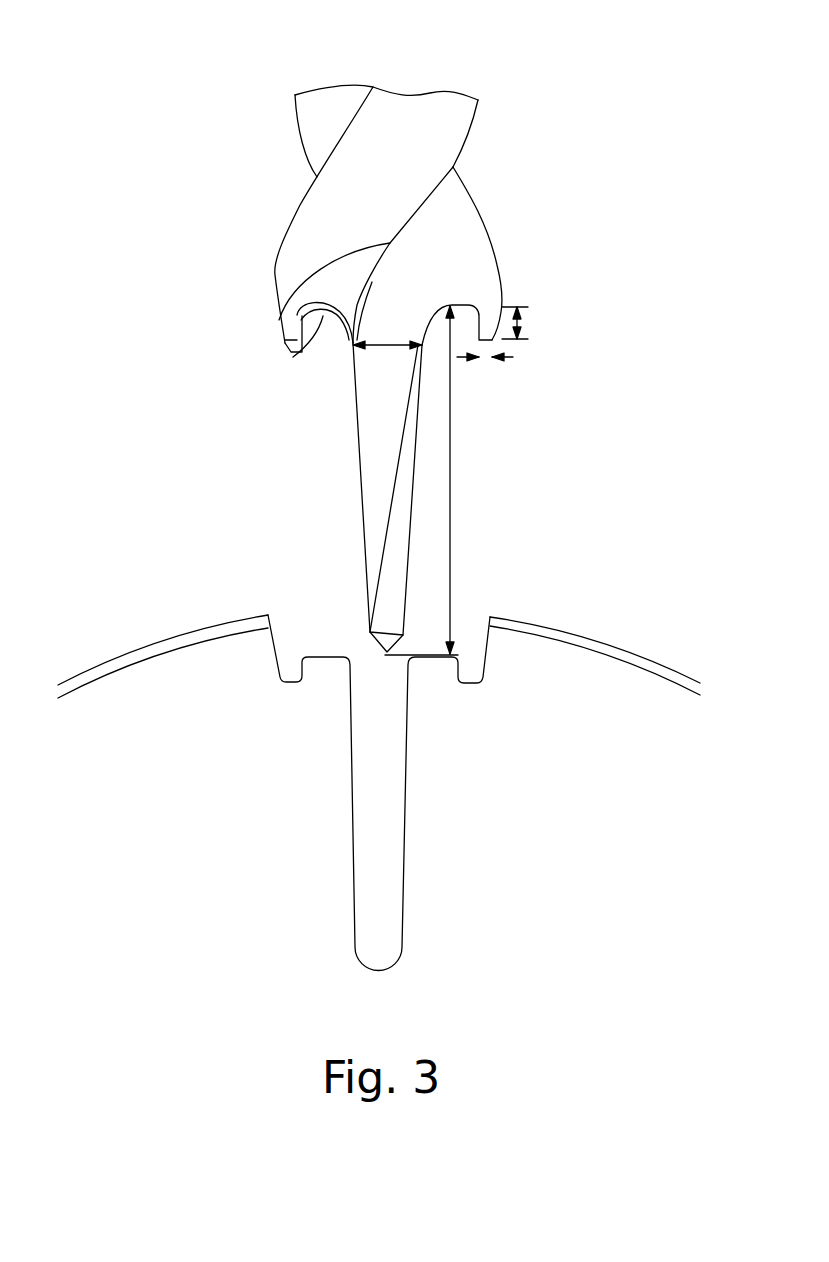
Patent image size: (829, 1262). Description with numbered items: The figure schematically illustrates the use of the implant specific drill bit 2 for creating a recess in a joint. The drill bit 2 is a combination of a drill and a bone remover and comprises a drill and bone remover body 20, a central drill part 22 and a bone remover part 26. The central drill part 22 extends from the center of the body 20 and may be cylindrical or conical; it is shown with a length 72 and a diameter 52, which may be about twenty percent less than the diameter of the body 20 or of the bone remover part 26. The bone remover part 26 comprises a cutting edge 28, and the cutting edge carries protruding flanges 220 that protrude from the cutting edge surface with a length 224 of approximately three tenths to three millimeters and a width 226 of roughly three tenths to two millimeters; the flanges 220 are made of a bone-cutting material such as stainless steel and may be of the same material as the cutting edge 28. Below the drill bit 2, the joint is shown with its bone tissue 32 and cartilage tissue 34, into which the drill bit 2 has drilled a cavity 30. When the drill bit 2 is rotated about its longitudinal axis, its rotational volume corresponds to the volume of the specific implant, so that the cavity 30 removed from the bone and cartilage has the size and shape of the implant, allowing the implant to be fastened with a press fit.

The implant specific drill bit 2 is at (533, 97).
The drill and bone remover body 20 is at (462, 160).
The central drill part 22 is at (385, 468).
The bone remover part 26 is at (465, 230).
The cutting edge 28 is at (297, 352).
The cavity 30 is at (373, 667).
The bone tissue 32 is at (563, 647).
The cartilage tissue 34 is at (645, 658).
The diameter 52 is at (387, 347).
The length 72 is at (450, 500).
The protruding flanges 220 is at (490, 313).
The length 224 is at (525, 318).
The width 226 is at (483, 360).